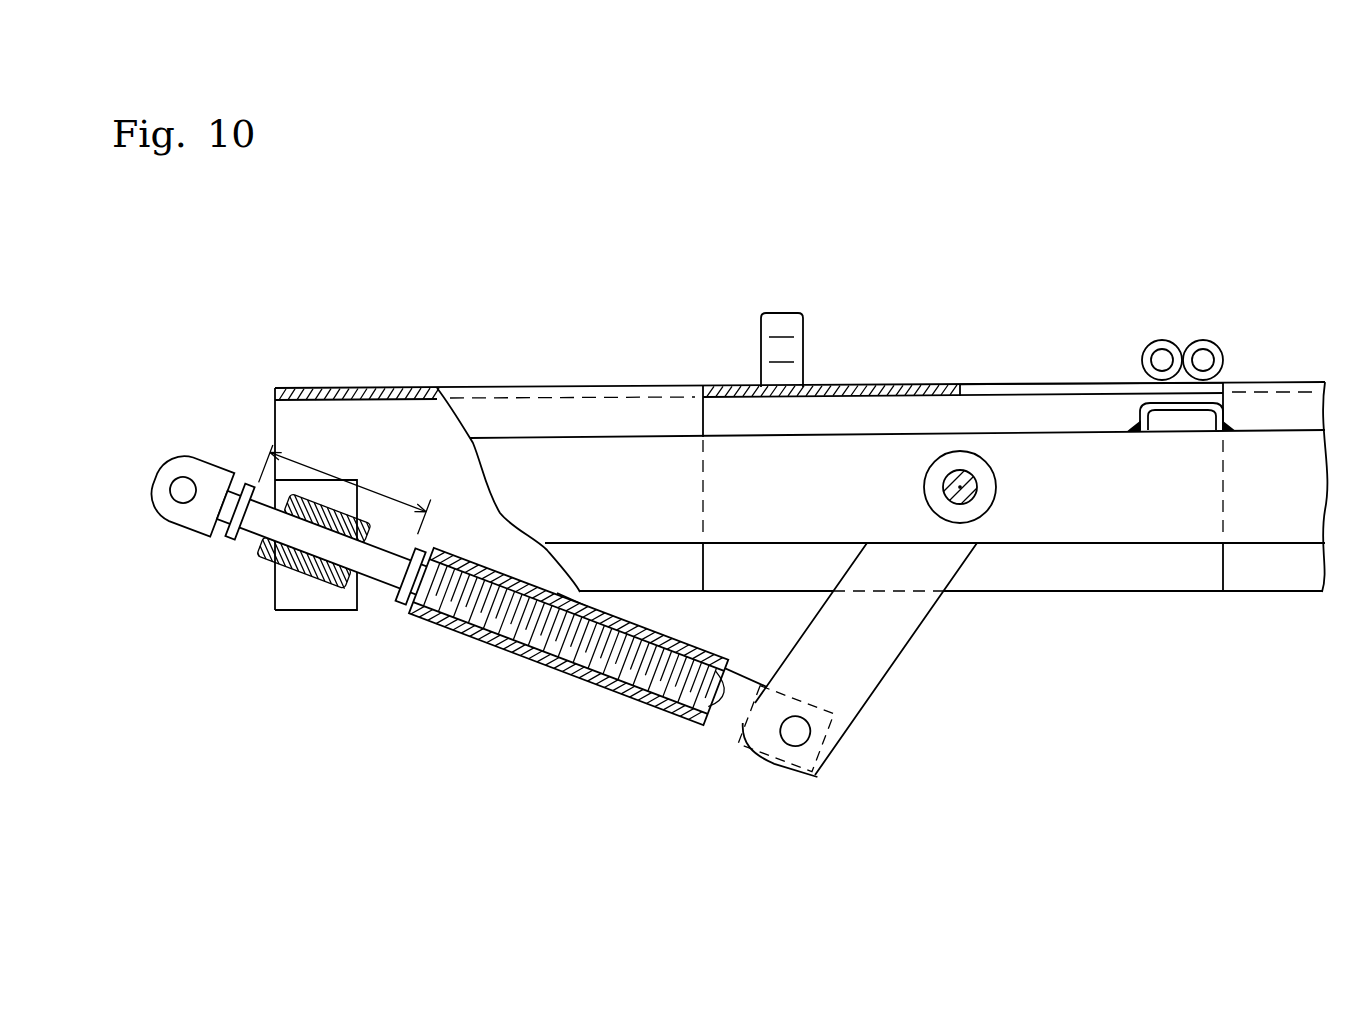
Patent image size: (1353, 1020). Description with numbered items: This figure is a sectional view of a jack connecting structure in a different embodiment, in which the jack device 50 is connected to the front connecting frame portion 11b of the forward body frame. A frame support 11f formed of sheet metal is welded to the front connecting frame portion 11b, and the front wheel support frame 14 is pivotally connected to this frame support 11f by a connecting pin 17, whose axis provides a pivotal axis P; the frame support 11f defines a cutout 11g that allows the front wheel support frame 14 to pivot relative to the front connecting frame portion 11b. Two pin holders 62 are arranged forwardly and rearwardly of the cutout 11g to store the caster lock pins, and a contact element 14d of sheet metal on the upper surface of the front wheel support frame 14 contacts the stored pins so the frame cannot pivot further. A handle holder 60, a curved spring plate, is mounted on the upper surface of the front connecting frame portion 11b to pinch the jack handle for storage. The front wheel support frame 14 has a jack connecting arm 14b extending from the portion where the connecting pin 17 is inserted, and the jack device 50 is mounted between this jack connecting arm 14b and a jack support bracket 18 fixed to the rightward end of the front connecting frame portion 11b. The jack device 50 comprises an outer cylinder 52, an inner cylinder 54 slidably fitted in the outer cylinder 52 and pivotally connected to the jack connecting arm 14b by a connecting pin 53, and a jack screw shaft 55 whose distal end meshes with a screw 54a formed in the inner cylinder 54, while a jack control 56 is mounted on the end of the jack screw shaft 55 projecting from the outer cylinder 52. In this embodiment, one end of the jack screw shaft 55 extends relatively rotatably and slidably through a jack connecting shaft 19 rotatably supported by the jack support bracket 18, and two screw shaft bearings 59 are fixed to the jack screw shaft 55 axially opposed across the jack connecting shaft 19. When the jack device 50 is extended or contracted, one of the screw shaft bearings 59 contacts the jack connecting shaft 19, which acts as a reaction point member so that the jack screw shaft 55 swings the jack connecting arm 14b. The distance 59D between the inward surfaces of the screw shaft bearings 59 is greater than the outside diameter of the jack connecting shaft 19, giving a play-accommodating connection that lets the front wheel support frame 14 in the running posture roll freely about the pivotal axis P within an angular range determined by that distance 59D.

The front connecting frame portion 11b is at (512, 390).
The frame support 11f is at (873, 385).
The cutout 11g is at (1003, 380).
The front wheel support frame 14 is at (1180, 530).
The jack connecting arm 14b is at (890, 657).
The contact element 14d is at (1140, 412).
The connecting pin 17 is at (943, 490).
The jack support bracket 18 is at (285, 608).
The jack connecting shaft 19 is at (312, 578).
The jack device 50 is at (474, 597).
The outer cylinder 52 is at (433, 630).
The connecting pin 53 is at (795, 742).
The inner cylinder 54 is at (687, 727).
The screw 54a is at (468, 572).
The jack screw shaft 55 is at (714, 688).
The jack control 56 is at (165, 470).
The screw shaft bearing 59 is at (236, 538).
The distance 59D is at (383, 490).
The handle holder 60 is at (780, 313).
The pin holder 62 is at (1208, 340).
The pivotal axis P is at (965, 505).